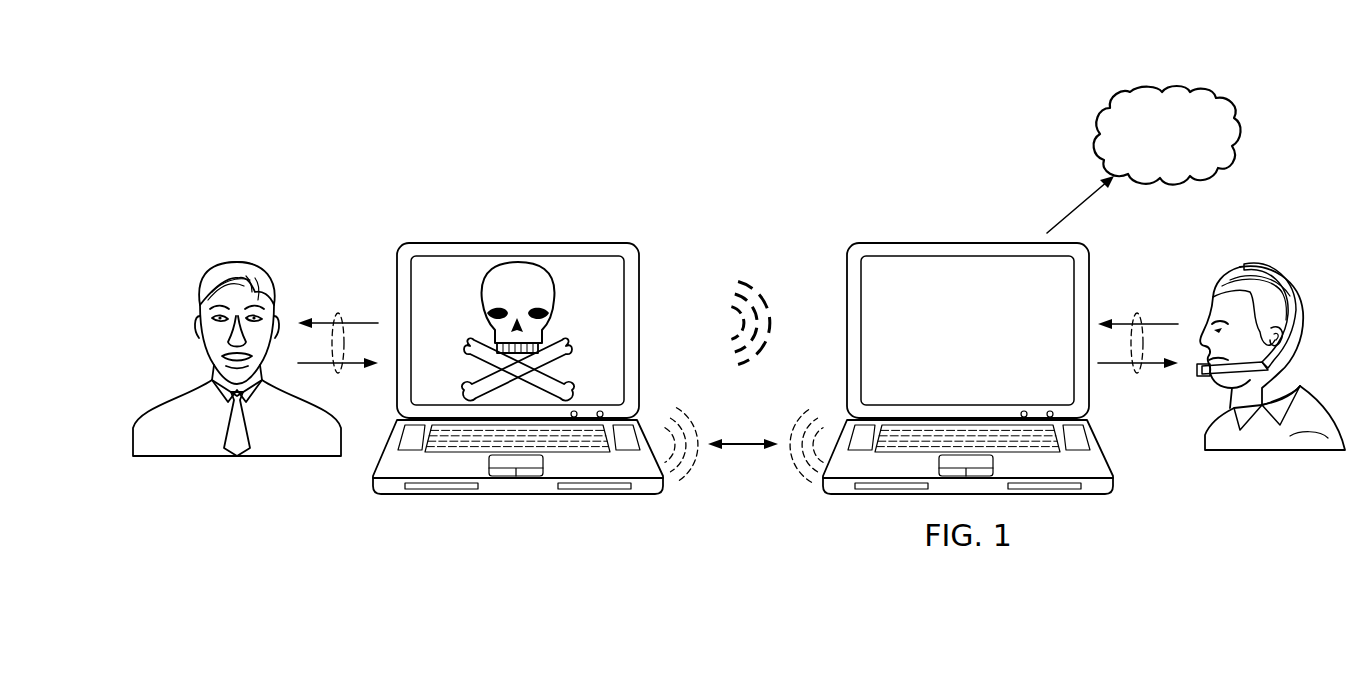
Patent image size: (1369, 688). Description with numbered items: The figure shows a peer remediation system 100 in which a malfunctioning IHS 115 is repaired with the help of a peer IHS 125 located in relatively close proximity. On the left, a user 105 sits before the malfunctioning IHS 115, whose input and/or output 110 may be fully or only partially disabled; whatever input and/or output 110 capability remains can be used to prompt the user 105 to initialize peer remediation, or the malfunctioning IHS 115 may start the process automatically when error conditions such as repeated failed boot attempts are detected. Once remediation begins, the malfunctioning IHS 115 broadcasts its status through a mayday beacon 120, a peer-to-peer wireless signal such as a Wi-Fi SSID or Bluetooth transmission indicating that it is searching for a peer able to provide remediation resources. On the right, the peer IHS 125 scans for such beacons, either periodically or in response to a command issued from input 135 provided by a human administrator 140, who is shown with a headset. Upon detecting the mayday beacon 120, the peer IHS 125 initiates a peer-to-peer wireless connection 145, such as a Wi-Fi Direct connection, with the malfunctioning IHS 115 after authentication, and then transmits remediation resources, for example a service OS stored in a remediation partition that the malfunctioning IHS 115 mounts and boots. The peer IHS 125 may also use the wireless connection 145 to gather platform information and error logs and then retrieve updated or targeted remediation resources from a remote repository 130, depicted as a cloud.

The peer remediation system 100 is at (312, 128).
The user 105 is at (240, 262).
The input and/or output 110 is at (338, 312).
The malfunctioning IHS 115 is at (458, 243).
The mayday beacon 120 is at (764, 302).
The peer IHS 125 is at (970, 243).
The remote repository 130 is at (1166, 86).
The input 135 is at (1137, 312).
The human administrator 140 is at (1256, 264).
The peer-to-peer wireless connection 145 is at (742, 446).